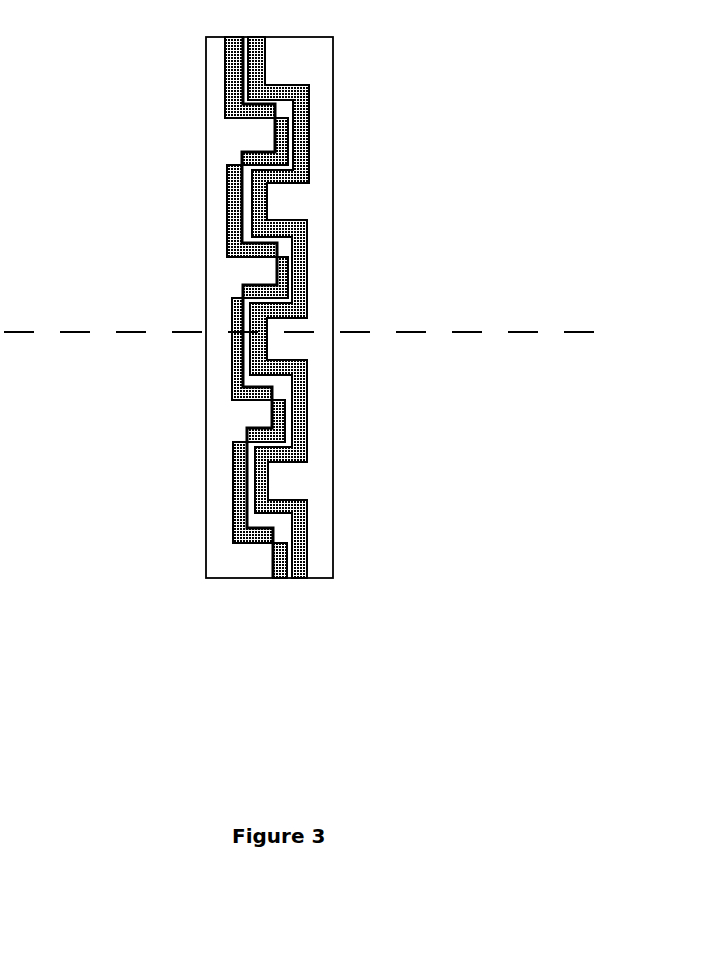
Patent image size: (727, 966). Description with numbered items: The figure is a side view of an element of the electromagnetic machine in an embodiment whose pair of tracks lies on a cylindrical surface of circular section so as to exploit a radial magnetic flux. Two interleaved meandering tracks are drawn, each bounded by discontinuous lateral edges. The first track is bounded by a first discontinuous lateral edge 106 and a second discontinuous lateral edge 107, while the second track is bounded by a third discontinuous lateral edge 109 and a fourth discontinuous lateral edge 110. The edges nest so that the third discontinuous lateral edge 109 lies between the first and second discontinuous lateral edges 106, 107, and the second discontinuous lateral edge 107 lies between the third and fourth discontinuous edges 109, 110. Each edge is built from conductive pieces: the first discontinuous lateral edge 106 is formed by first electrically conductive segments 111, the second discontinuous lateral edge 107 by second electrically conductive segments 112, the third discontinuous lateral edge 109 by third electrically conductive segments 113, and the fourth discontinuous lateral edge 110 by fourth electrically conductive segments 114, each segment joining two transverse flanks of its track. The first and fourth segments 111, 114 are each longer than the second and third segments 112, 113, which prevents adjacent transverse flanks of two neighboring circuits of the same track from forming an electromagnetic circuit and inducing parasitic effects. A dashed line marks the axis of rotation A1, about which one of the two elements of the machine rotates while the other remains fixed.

The first discontinuous lateral edge 106 is at (220, 373).
The second discontinuous lateral edge 107 is at (262, 586).
The third discontinuous lateral edge 109 is at (280, 477).
The fourth discontinuous lateral edge 110 is at (322, 409).
The first electrically conductive segment 111 is at (227, 220).
The second electrically conductive segment 112 is at (277, 262).
The third electrically conductive segment 113 is at (267, 205).
The fourth electrically conductive segment 114 is at (307, 112).
The axis of rotation A1 is at (315, 332).